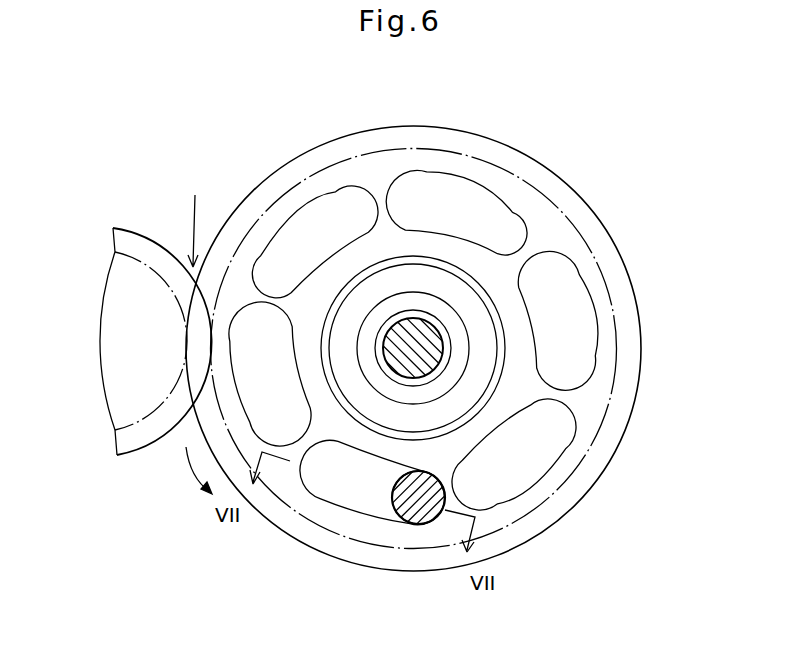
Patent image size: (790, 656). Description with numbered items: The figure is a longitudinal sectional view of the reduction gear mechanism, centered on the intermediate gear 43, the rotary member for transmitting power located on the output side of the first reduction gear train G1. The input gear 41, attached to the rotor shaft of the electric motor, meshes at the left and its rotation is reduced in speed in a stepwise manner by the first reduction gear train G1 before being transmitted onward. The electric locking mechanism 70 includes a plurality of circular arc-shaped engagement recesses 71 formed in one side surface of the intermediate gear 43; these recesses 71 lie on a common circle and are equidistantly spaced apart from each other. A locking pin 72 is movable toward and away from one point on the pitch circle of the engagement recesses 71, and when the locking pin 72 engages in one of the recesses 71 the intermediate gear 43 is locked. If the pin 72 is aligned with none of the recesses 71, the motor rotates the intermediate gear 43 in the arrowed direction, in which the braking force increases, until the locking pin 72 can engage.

The input gear 41 is at (135, 237).
The intermediate gear 43 is at (319, 158).
The first reduction gear train G1 is at (192, 218).
The electric locking mechanism 70 is at (427, 540).
The engagement recesses 71 is at (539, 249).
The locking pin 72 is at (403, 514).